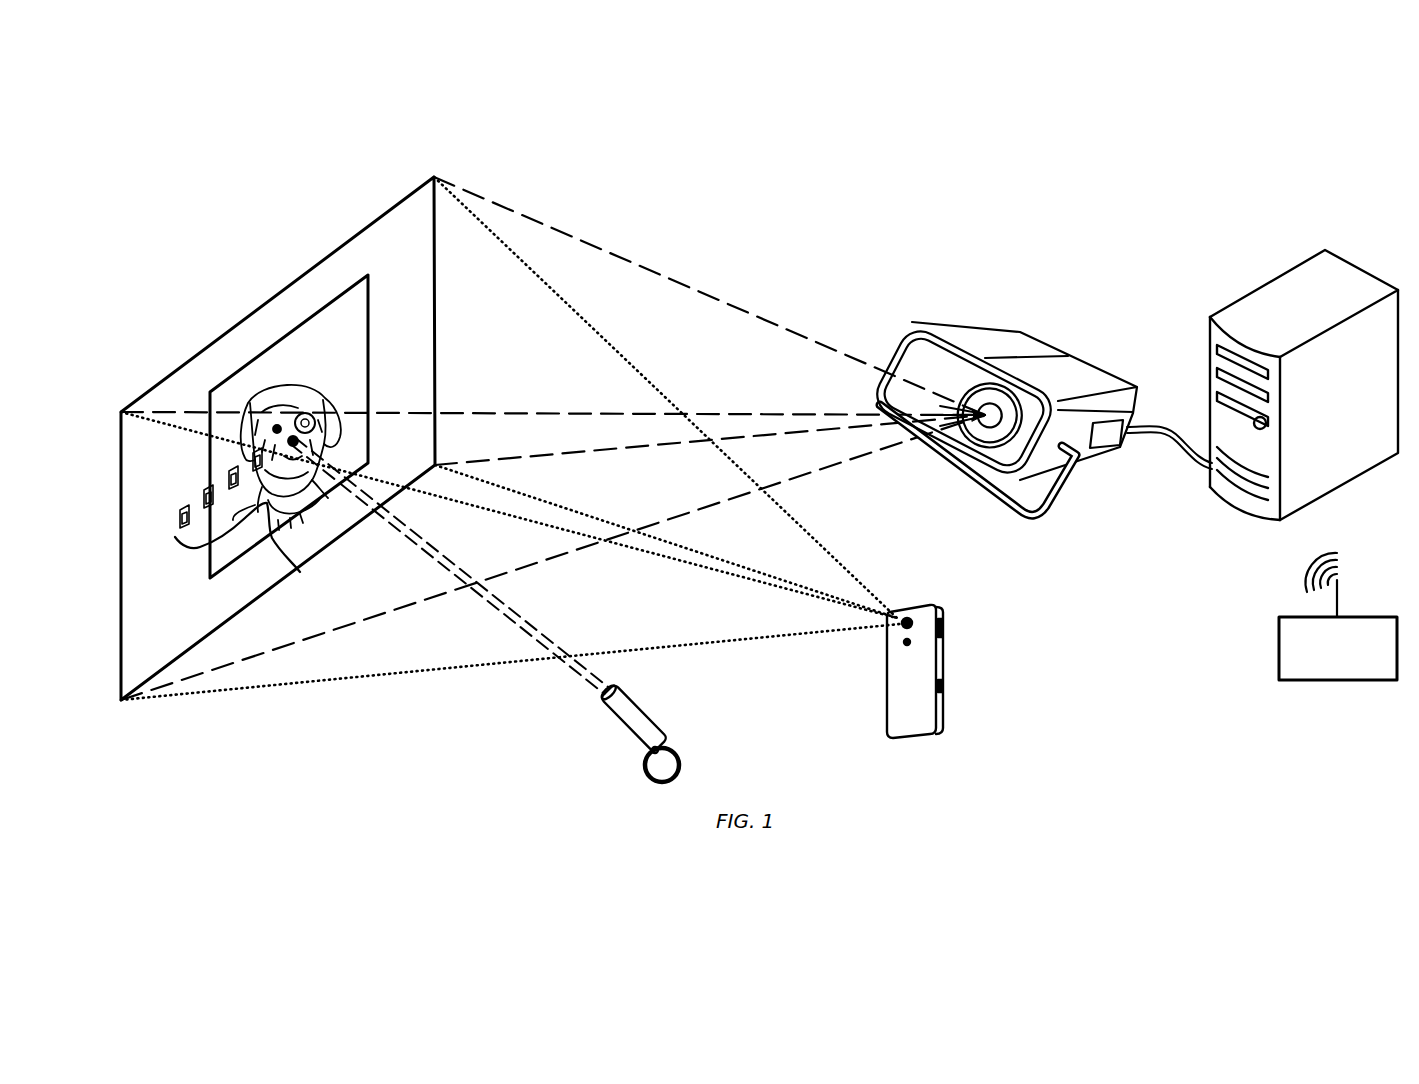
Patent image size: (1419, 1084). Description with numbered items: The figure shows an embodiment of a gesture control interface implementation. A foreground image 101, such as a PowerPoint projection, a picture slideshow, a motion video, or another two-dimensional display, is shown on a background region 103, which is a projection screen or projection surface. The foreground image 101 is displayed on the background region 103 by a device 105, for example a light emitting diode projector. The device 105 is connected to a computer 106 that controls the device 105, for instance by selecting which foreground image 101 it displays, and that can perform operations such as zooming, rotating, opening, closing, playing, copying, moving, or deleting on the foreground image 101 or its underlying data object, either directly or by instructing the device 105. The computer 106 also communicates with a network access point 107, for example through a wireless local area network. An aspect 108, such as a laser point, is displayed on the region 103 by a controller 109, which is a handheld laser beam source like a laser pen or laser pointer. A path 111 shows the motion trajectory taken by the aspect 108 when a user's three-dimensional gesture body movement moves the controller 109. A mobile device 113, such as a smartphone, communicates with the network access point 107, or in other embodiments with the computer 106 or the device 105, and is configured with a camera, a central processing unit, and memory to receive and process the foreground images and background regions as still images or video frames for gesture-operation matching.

The foreground image 101 is at (289, 426).
The background region 103 is at (313, 267).
The device 105 is at (958, 328).
The computer 106 is at (1342, 487).
The network access point 107 is at (1338, 616).
The aspect 108 is at (306, 413).
The controller 109 is at (627, 728).
The path 111 is at (300, 572).
The mobile device 113 is at (900, 700).